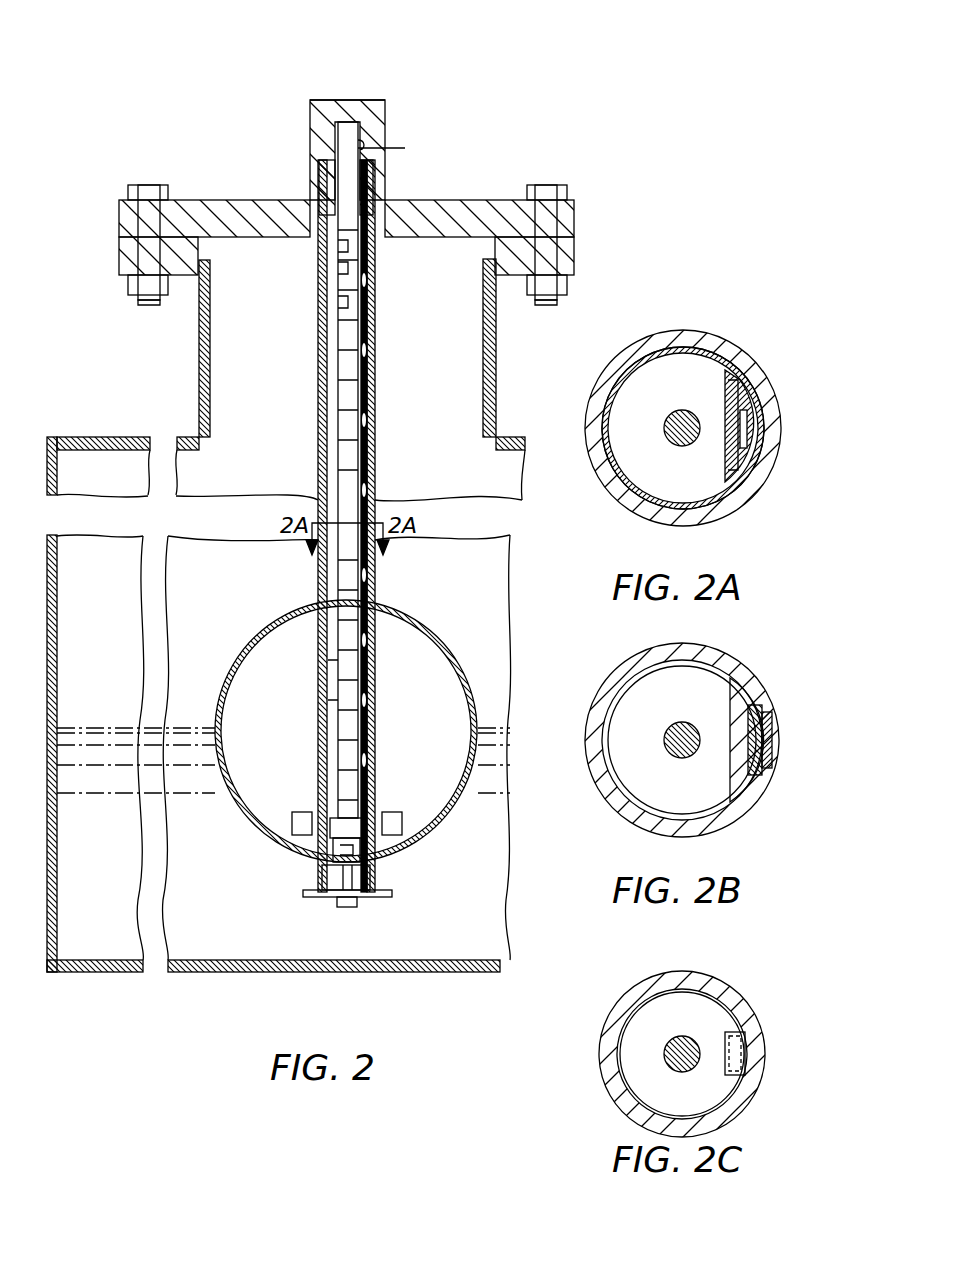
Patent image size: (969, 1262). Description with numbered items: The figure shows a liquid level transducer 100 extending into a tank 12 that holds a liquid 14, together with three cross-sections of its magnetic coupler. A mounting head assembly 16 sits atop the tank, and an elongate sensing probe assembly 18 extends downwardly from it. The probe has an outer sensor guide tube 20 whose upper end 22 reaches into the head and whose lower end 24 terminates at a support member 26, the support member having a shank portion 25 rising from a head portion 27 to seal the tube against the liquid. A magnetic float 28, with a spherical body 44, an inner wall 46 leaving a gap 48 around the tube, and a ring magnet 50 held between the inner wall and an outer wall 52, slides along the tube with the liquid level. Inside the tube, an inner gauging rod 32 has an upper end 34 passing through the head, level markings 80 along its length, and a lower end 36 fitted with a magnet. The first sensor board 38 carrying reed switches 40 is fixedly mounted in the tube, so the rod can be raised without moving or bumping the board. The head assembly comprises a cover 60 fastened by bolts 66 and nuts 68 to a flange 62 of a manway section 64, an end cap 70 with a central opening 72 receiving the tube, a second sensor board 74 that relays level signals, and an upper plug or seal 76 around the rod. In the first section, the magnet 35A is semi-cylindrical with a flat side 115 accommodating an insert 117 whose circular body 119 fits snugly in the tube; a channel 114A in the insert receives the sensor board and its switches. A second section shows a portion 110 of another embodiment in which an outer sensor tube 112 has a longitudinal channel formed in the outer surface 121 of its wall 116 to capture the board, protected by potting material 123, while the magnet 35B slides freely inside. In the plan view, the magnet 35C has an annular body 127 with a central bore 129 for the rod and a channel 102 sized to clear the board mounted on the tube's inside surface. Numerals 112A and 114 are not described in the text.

In FIG. 2, the liquid level transducer 100 is at (437, 70).
In FIG. 2, the tank 12 is at (45, 685).
In FIG. 2, the liquid 14 is at (76, 866).
In FIG. 2, the mounting head assembly 16 is at (206, 198).
In FIG. 2, the elongate sensing probe assembly 18 is at (374, 372).
In FIG. 2, the outer sensor guide tube 20 is at (300, 368).
In FIG. 2, the upper end 22 is at (405, 150).
In FIG. 2, the lower end 24 is at (372, 875).
In FIG. 2, the shank portion 25 is at (330, 878).
In FIG. 2, the support member 26 is at (380, 897).
In FIG. 2, the head portion 27 is at (345, 906).
In FIG. 2, the magnetic float 28 is at (415, 604).
In FIG. 2, the inner gauging rod 32 is at (338, 330).
In FIG. 2A, the inner gauging rod 32 is at (682, 410).
In FIG. 2B, the inner gauging rod 32 is at (682, 758).
In FIG. 2C, the inner gauging rod 32 is at (664, 1045).
In FIG. 2, the upper end 34 is at (318, 118).
In FIG. 2A, the magnet 35A is at (688, 475).
In FIG. 2B, the magnet 35B is at (648, 740).
In FIG. 2, the magnet 35C is at (327, 852).
In FIG. 2C, the magnet 35C is at (688, 1012).
In FIG. 2, the lower end 36 is at (362, 815).
In FIG. 2, the first sensor board 38 is at (345, 450).
In FIG. 2A, the first sensor board 38 is at (728, 400).
In FIG. 2B, the first sensor board 38 is at (764, 720).
In FIG. 2C, the first sensor board 38 is at (758, 1060).
In FIG. 2, the reed switches 40 is at (368, 278).
In FIG. 2A, the reed switches 40 is at (748, 428).
In FIG. 2B, the reed switches 40 is at (775, 732).
In FIG. 2, the spherical body 44 is at (248, 650).
In FIG. 2, the inner wall 46 is at (317, 686).
In FIG. 2, the gap 48 is at (317, 665).
In FIG. 2, the ring magnet 50 is at (336, 830).
In FIG. 2, the outer wall 52 is at (292, 823).
In FIG. 2, the cover 60 is at (500, 199).
In FIG. 2, the flange 62 is at (576, 260).
In FIG. 2, the manway section 64 is at (497, 350).
In FIG. 2, the bolts 66 is at (145, 188).
In FIG. 2, the nuts 68 is at (128, 292).
In FIG. 2, the end cap 70 is at (345, 100).
In FIG. 2, the central opening 72 is at (322, 168).
In FIG. 2, the second sensor board 74 is at (385, 114).
In FIG. 2, the upper plug or seal 76 is at (322, 192).
In FIG. 2, the level markings 80 is at (336, 268).
In FIG. 2C, the channel 102 is at (746, 1040).
In FIG. 2B, the portion of a liquid level transducer 110 is at (760, 656).
In FIG. 2B, the outer sensor tube 112 is at (610, 775).
In FIG. 2A, the outer tube 112A is at (603, 470).
In FIG. 2B, the sensor pad 114 is at (772, 760).
In FIG. 2, the channel 114A is at (375, 390).
In FIG. 2A, the channel 114A is at (752, 440).
In FIG. 2A, the flat side 115 is at (732, 337).
In FIG. 2B, the wall 116 is at (640, 682).
In FIG. 2, the insert 117 is at (320, 422).
In FIG. 2A, the insert 117 is at (755, 375).
In FIG. 2A, the circular body 119 is at (702, 333).
In FIG. 2B, the outer surface 121 is at (766, 702).
In FIG. 2B, the potting material 123 is at (755, 795).
In FIG. 2C, the annular body 127 is at (643, 1000).
In FIG. 2C, the central bore 129 is at (682, 1072).